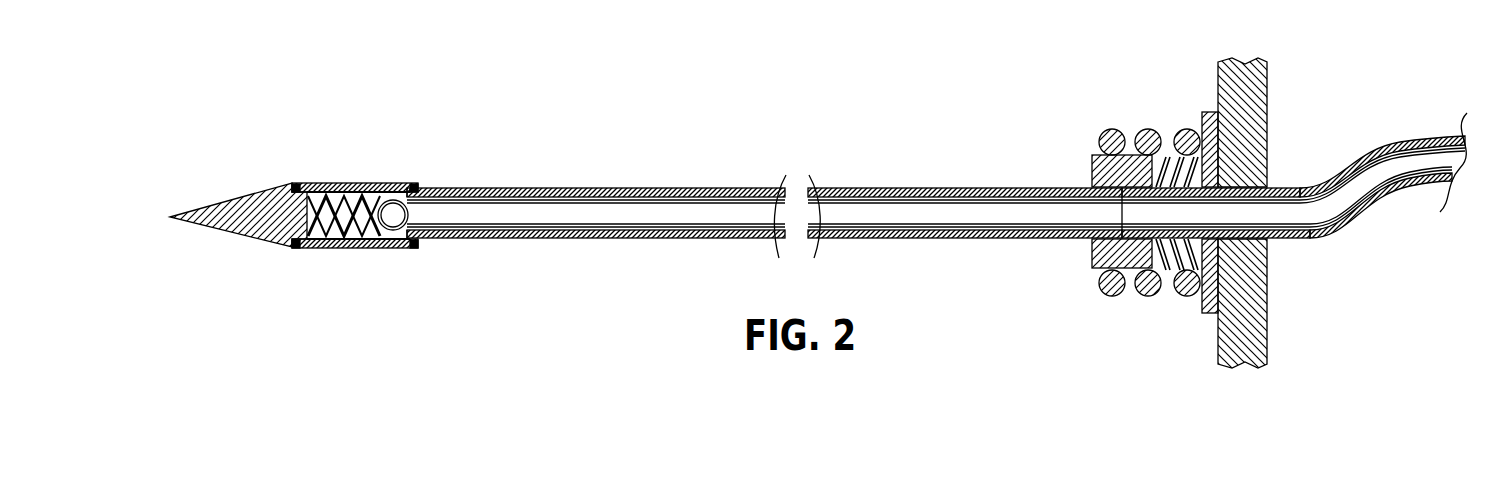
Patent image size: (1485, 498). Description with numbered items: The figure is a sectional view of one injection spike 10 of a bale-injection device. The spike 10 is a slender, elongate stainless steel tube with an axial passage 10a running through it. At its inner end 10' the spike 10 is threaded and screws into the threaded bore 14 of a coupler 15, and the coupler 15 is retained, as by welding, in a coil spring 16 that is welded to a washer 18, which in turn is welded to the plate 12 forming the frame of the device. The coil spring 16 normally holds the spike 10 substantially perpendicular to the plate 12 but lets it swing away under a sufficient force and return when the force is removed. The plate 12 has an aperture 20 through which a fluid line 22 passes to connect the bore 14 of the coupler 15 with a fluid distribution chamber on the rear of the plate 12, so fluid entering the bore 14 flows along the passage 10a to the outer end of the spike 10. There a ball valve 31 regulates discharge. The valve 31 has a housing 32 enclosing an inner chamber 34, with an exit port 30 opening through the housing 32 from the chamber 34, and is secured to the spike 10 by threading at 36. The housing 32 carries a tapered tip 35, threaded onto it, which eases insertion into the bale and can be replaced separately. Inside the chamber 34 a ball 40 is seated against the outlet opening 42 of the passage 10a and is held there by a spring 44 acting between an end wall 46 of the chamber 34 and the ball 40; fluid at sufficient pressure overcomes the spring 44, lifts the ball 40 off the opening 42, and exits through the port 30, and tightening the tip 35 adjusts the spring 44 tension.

The spike 10 is at (764, 241).
The passage 10a is at (975, 213).
The inner end 10' is at (1071, 172).
The plate 12 is at (1222, 342).
The threaded bore 14 is at (1093, 257).
The coupler 15 is at (1085, 152).
The coil spring 16 is at (1108, 296).
The washer 18 is at (1190, 305).
The aperture 20 is at (1262, 170).
The fluid line 22 is at (1317, 207).
The exit port 30 is at (327, 249).
The ball valve 31 is at (332, 158).
The housing 32 is at (368, 249).
The inner chamber 34 is at (357, 196).
The tapered tip 35 is at (242, 193).
The threading 36 is at (405, 184).
The ball 40 is at (395, 224).
The outlet opening 42 is at (418, 218).
The spring 44 is at (317, 240).
The end wall 46 is at (322, 182).